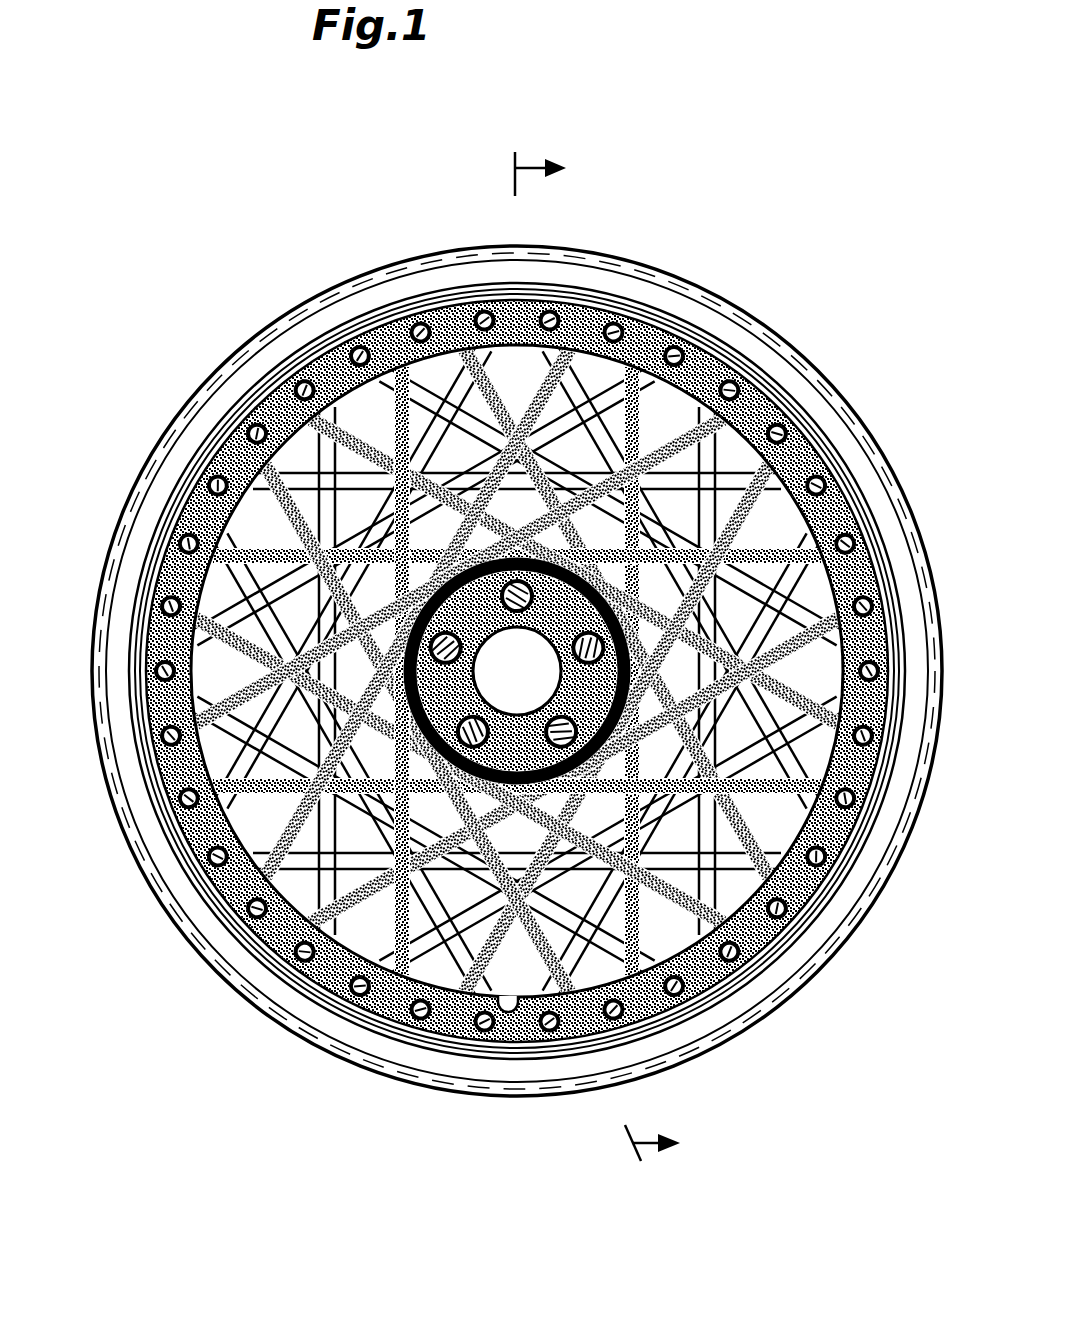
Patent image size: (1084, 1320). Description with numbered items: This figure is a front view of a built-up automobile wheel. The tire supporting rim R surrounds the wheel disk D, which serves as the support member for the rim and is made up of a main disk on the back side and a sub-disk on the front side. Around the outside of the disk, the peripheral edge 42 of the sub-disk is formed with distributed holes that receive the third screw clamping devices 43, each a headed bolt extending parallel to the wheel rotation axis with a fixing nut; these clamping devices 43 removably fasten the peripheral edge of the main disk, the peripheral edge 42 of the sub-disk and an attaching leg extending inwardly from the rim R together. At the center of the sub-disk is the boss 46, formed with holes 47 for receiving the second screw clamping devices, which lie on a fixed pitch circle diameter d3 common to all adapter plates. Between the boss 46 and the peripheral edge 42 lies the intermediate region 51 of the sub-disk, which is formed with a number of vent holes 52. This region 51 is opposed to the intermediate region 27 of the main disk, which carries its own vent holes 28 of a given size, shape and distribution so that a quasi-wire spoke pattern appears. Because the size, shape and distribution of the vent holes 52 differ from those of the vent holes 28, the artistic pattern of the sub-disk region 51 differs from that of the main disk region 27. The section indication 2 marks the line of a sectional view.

The section line for FIG. 2 is at (597, 653).
The tire supporting rim R is at (683, 290).
The wheel disk D is at (386, 1025).
The peripheral edge of the sub-disk 42 is at (758, 415).
The third screw clamping devices 43 is at (308, 373).
The intermediate region of the main disk 27 is at (336, 522).
The vent holes of the main disk 28 is at (418, 875).
The boss of the sub-disk 46 is at (689, 637).
The holes of the sub-disk boss 47 is at (515, 520).
The fixed PCD d3 is at (684, 742).
The intermediate region of the sub-disk 51 is at (634, 945).
The vent holes of the sub-disk 52 is at (738, 838).